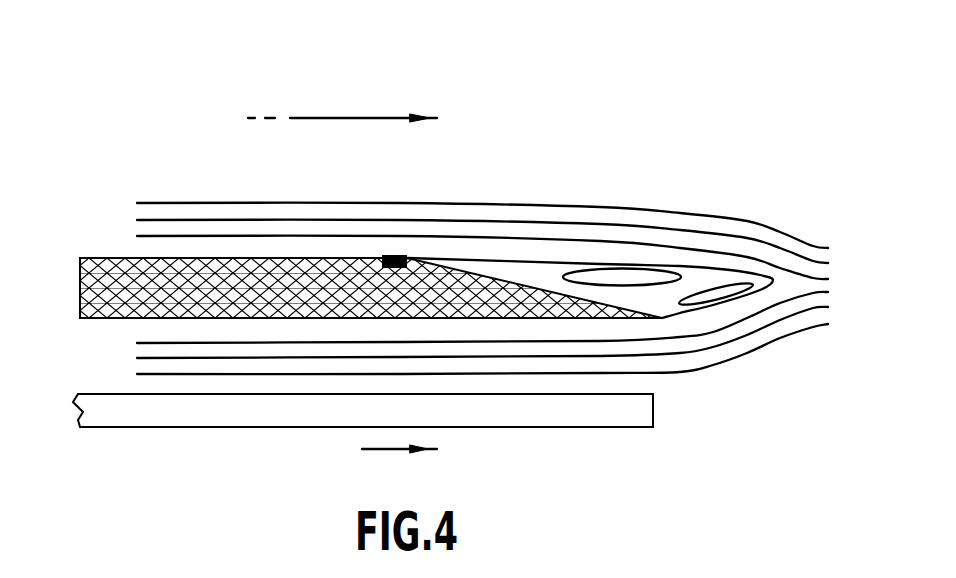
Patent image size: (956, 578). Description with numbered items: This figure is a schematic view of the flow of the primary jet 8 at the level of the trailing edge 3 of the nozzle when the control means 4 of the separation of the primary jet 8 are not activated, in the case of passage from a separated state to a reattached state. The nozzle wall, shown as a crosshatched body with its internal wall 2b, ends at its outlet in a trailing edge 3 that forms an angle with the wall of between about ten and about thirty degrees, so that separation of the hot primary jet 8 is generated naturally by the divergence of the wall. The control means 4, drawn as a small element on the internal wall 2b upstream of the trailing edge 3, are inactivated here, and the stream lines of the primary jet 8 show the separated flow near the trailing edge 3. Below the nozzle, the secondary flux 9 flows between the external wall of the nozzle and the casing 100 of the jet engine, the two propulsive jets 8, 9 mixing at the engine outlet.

The internal wall 2b is at (93, 257).
The trailing edge 3 is at (613, 299).
The control means 4 is at (395, 256).
The primary jet 8 is at (760, 220).
The secondary flux 9 is at (455, 375).
The casing 100 is at (113, 428).